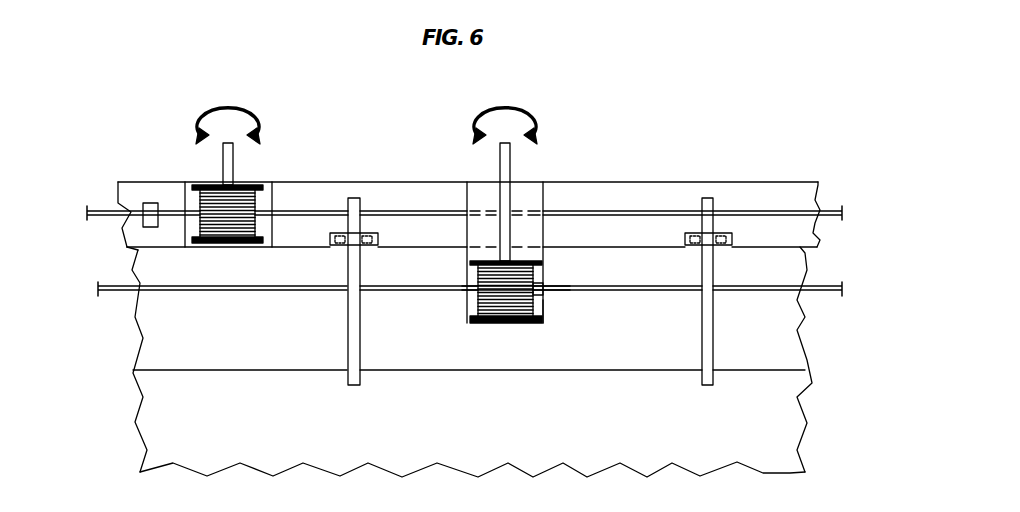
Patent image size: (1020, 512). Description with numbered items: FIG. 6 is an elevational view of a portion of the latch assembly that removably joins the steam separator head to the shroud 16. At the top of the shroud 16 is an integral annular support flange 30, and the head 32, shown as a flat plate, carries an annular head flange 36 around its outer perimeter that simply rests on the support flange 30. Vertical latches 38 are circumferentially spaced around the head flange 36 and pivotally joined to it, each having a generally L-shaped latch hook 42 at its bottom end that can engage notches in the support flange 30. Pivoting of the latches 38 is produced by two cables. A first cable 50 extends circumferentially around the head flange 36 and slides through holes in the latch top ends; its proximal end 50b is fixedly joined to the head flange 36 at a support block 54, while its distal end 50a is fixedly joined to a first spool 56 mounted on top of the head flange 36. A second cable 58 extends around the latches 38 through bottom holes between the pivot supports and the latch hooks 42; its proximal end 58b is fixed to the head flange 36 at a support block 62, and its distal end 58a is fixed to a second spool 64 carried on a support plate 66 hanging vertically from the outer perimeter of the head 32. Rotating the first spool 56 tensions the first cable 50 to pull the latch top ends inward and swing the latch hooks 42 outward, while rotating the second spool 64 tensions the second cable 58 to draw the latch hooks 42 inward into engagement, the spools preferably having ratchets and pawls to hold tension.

The shroud 16 is at (803, 449).
The support flange 30 is at (805, 330).
The head 32 is at (738, 168).
The head flange 36 is at (818, 235).
The latches 38 is at (342, 316).
The latch hook 42 is at (780, 372).
The first cable 50 is at (397, 197).
The first cable distal end 50a is at (262, 200).
The first cable proximal end 50b is at (131, 212).
The support block 54 is at (150, 203).
The first spool 56 is at (250, 185).
The second cable 58 is at (402, 292).
The second cable distal end 58a is at (470, 305).
The second cable proximal end 58b is at (565, 290).
The support block 62 is at (542, 305).
The second spool 64 is at (510, 323).
The support plate 66 is at (543, 235).